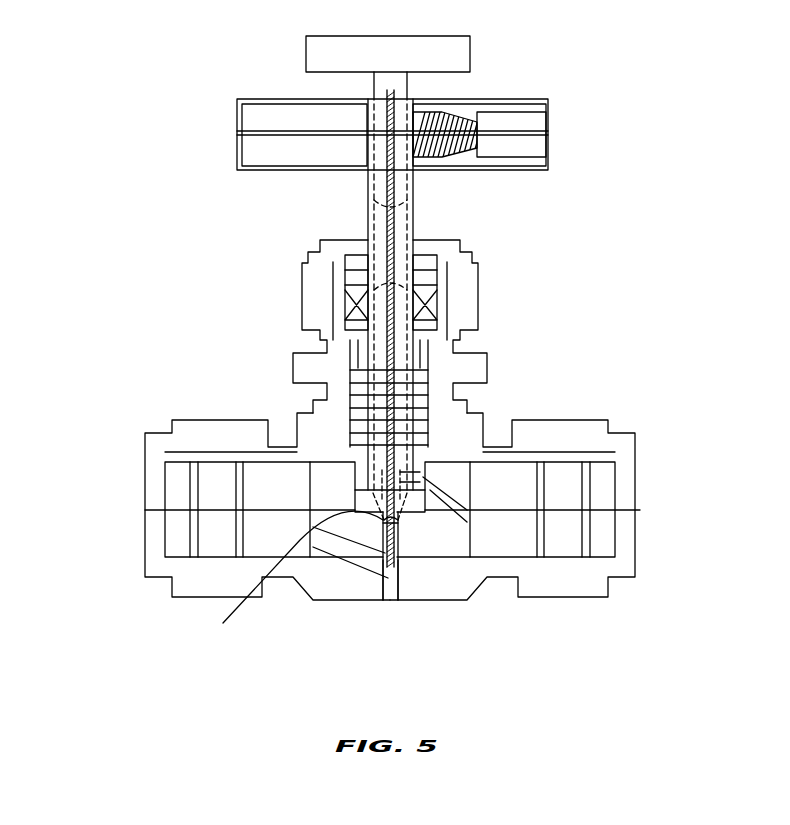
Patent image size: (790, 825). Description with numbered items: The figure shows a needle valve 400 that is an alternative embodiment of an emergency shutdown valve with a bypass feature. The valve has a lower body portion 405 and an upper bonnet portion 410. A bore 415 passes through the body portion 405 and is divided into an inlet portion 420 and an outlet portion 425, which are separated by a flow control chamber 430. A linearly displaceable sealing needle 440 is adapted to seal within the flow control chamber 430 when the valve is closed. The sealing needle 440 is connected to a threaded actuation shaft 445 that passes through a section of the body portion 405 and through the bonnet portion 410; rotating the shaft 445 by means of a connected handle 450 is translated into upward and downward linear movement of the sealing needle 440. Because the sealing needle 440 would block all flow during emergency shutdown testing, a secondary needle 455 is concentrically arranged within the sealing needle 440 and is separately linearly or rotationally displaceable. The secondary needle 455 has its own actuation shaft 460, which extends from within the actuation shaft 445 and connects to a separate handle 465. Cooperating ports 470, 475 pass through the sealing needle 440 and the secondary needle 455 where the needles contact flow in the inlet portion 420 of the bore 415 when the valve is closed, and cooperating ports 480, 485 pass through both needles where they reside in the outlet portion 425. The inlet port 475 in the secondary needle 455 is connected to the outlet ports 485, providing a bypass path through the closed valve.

The needle valve 400 is at (105, 102).
The body portion 405 is at (193, 430).
The bonnet portion 410 is at (322, 275).
The bore 415 is at (392, 577).
The inlet portion 420 is at (208, 517).
The outlet portion 425 is at (568, 524).
The flow control chamber 430 is at (289, 580).
The sealing needle 440 is at (365, 472).
The threaded actuation shaft 445 is at (367, 220).
The handle 450 is at (527, 105).
The secondary needle 455 is at (398, 462).
The actuation shaft 460 is at (402, 188).
The separate handle 465 is at (468, 45).
The cooperating port 470 is at (522, 433).
The inlet port 475 is at (418, 473).
The cooperating port 480 is at (393, 586).
The outlet port 485 is at (387, 523).